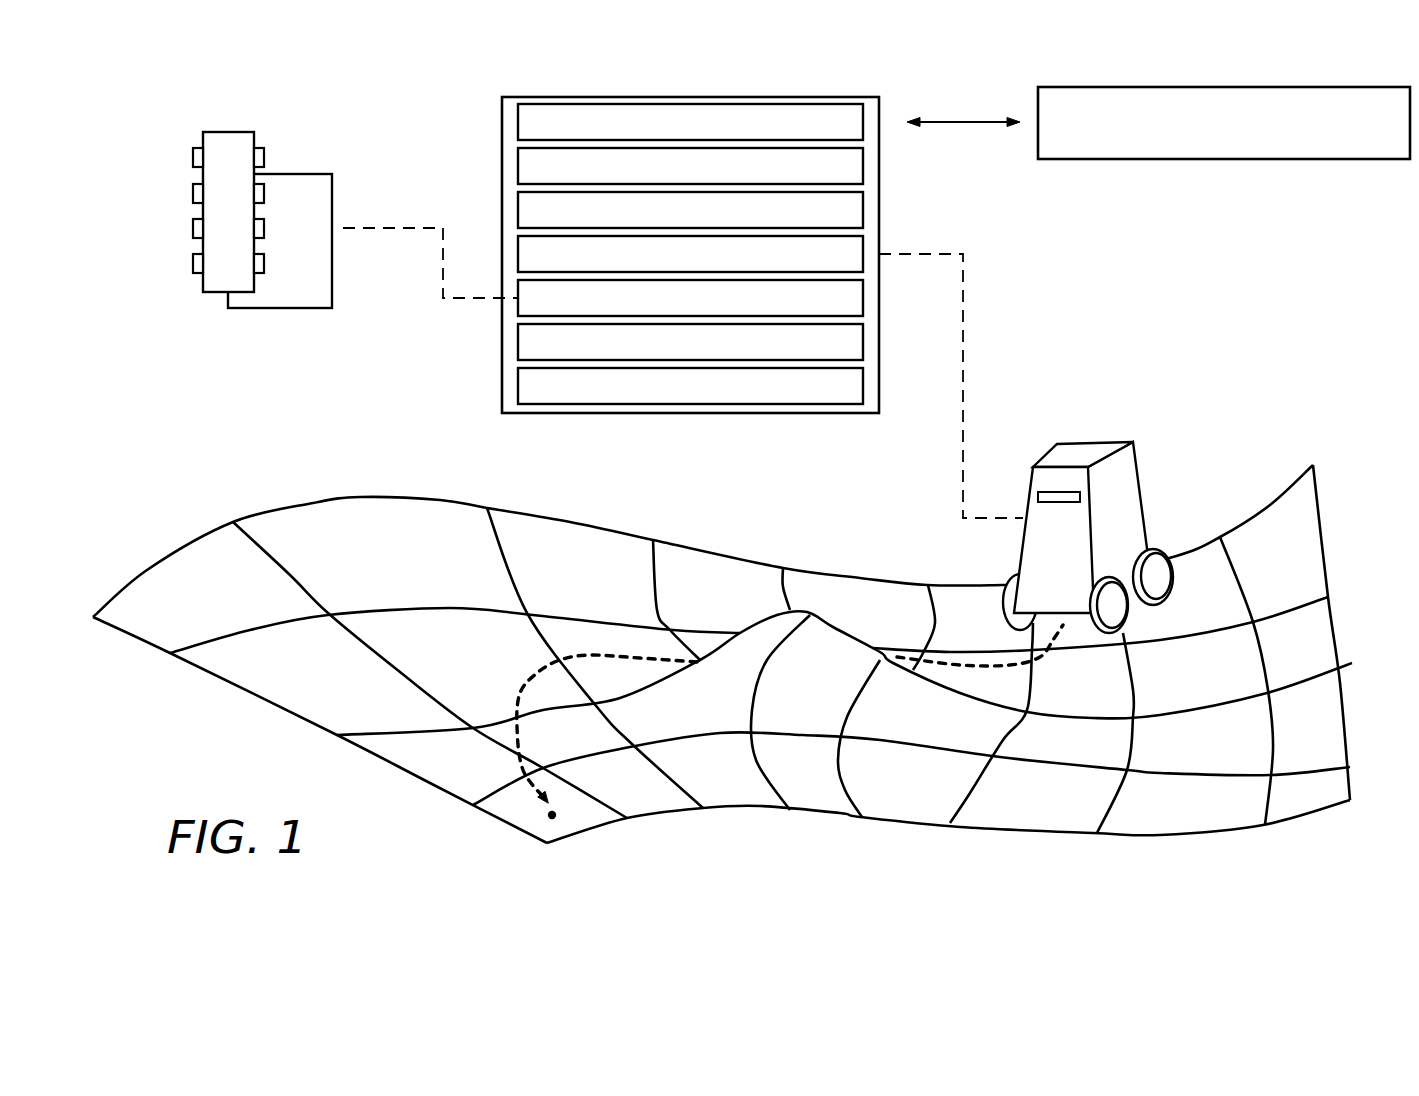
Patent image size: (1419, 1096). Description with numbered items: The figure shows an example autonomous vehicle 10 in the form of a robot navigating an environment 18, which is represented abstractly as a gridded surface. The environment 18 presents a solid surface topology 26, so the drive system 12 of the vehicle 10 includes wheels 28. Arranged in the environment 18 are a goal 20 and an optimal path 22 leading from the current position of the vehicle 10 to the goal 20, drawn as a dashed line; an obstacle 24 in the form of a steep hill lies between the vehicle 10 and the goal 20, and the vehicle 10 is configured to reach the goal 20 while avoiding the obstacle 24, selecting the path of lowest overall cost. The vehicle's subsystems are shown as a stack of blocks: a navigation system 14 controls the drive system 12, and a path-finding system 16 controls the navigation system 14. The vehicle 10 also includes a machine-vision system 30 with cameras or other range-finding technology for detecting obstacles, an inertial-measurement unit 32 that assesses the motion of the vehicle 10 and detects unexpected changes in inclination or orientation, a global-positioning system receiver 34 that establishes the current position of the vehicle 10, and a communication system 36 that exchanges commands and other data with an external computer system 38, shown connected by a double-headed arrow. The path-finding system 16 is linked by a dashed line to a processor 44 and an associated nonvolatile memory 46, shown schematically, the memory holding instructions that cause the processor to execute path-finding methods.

The autonomous vehicle 10 is at (1046, 550).
The drive system 12 is at (777, 397).
The navigation system 14 is at (807, 353).
The path-finding system 16 is at (815, 309).
The environment 18 is at (722, 654).
The goal 20 is at (566, 817).
The optimal path 22 is at (789, 714).
The obstacle 24 is at (806, 657).
The solid surface topology 26 is at (703, 541).
The wheels 28 is at (1103, 617).
The machine-vision system 30 is at (827, 265).
The inertial-measurement unit 32 is at (851, 221).
The global-positioning system (GPS) receiver 34 is at (777, 177).
The communication system 36 is at (690, 122).
The external computer system 38 is at (1212, 148).
The processor 44 is at (269, 255).
The nonvolatile memory 46 is at (217, 224).